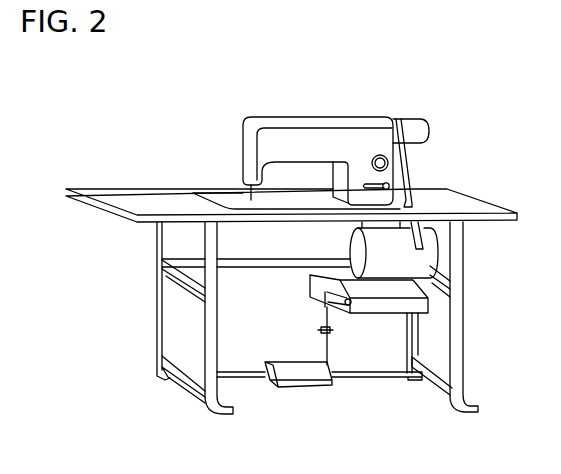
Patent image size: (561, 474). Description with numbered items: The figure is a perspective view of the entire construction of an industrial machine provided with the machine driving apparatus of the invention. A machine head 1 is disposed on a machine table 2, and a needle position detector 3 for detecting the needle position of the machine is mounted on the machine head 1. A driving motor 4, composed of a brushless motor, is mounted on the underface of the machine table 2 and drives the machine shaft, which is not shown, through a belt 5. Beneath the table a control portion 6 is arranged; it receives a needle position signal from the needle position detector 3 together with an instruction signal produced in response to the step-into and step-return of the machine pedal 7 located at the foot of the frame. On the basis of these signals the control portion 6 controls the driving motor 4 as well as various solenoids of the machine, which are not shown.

The machine head 1 is at (307, 133).
The machine table 2 is at (445, 190).
The needle position detector 3 is at (415, 123).
The driving motor 4 is at (427, 263).
The belt 5 is at (407, 170).
The control portion 6 is at (428, 308).
The machine pedal 7 is at (315, 378).